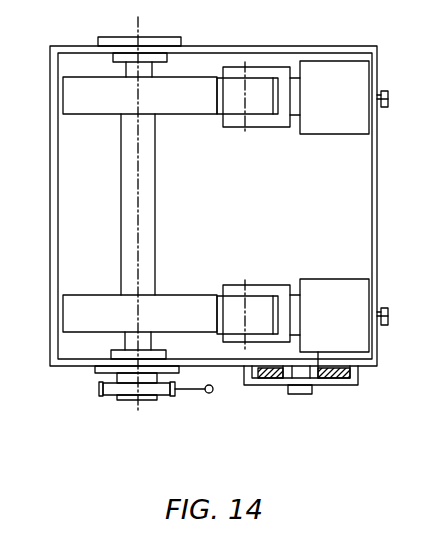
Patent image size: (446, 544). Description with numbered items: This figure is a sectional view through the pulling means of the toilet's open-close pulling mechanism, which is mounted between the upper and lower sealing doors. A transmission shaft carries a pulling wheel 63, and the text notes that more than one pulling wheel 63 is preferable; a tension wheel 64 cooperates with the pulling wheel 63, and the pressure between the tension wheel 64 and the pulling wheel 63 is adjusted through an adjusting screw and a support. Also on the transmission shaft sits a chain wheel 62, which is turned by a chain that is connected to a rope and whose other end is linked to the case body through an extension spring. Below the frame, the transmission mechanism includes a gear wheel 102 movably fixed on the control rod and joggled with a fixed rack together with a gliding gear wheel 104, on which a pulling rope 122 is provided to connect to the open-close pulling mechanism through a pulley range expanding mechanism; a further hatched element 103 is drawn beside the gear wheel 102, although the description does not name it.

The chain wheel 62 is at (118, 396).
The pulling wheel 63 is at (72, 313).
The tension wheel 64 is at (260, 90).
The gear wheel 102 is at (307, 376).
The bearing 103 is at (270, 377).
The gliding gear wheel 104 is at (346, 378).
The pulling rope 122 is at (211, 394).